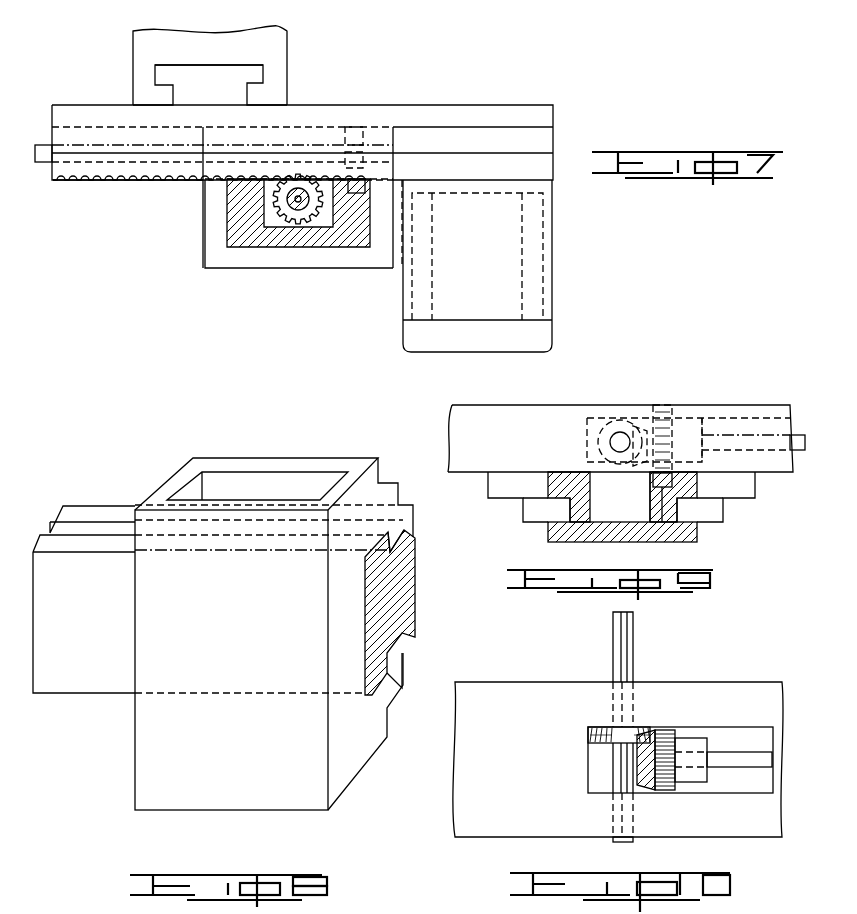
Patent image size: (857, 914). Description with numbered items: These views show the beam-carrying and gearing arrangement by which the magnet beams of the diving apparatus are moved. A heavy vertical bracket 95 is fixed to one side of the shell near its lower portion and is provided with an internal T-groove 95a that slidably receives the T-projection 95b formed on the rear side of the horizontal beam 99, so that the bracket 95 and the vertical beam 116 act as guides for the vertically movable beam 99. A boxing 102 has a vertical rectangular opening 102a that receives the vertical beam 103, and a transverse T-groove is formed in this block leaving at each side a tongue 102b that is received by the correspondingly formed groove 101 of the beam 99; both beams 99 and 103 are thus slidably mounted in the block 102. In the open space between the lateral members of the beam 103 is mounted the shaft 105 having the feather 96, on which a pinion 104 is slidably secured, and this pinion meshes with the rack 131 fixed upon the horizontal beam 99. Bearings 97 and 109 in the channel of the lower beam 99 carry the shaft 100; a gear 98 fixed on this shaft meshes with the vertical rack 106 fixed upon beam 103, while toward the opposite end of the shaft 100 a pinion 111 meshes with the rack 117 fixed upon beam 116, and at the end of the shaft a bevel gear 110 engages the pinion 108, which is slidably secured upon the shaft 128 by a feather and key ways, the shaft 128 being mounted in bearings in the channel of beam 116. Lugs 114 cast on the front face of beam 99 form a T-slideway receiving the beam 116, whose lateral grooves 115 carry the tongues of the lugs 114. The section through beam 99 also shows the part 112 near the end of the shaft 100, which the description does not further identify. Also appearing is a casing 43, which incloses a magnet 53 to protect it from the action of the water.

In FIG. 7, the casing 43 is at (545, 307).
In FIG. 7, the magnet 53 is at (523, 335).
In FIG. 7, the vertical bracket 95 is at (240, 65).
In FIG. 7, the internal T-groove 95a is at (265, 69).
In FIG. 7, the T-projection 95b is at (163, 77).
In FIG. 7, the feather 96 is at (299, 196).
In FIG. 7, the bearing 97 is at (335, 135).
In FIG. 7, the gear 98 is at (360, 133).
In FIG. 7, the horizontal beam 99 is at (493, 115).
In FIG. 8, the horizontal beam 99 is at (105, 538).
In FIG. 9, the horizontal beam 99 is at (458, 420).
In FIG. 10, the horizontal beam 99 is at (472, 805).
In FIG. 7, the shaft 100 is at (43, 160).
In FIG. 9, the shaft 100 is at (802, 435).
In FIG. 10, the shaft 100 is at (723, 757).
In FIG. 7, the groove 101 is at (132, 153).
In FIG. 8, the groove 101 is at (97, 527).
In FIG. 7, the boxing 102 is at (217, 265).
In FIG. 8, the boxing 102 is at (333, 463).
In FIG. 8, the vertical rectangular opening 102a is at (250, 480).
In FIG. 8, the tongue 102b is at (410, 630).
In FIG. 9, the tongue 102b is at (622, 497).
In FIG. 7, the vertical beam 103 is at (240, 238).
In FIG. 7, the pinion 104 is at (282, 222).
In FIG. 7, the shaft 105 is at (300, 210).
In FIG. 7, the vertical rack 106 is at (357, 193).
In FIG. 9, the pinion 108 is at (603, 425).
In FIG. 10, the pinion 108 is at (613, 728).
In FIG. 10, the bearing 109 is at (693, 745).
In FIG. 9, the bevel gear 110 is at (642, 425).
In FIG. 10, the bevel gear 110 is at (655, 732).
In FIG. 9, the pinion 111 is at (663, 430).
In FIG. 10, the pinion 111 is at (668, 738).
In FIG. 9, the bore 112 is at (703, 435).
In FIG. 9, the lugs 114 is at (515, 485).
In FIG. 8, the lateral grooves 115 is at (391, 543).
In FIG. 9, the lateral grooves 115 is at (550, 522).
In FIG. 9, the vertical beam 116 is at (603, 542).
In FIG. 9, the rack 117 is at (663, 480).
In FIG. 9, the shaft 128 is at (621, 441).
In FIG. 10, the shaft 128 is at (628, 640).
In FIG. 7, the rack 131 is at (83, 180).